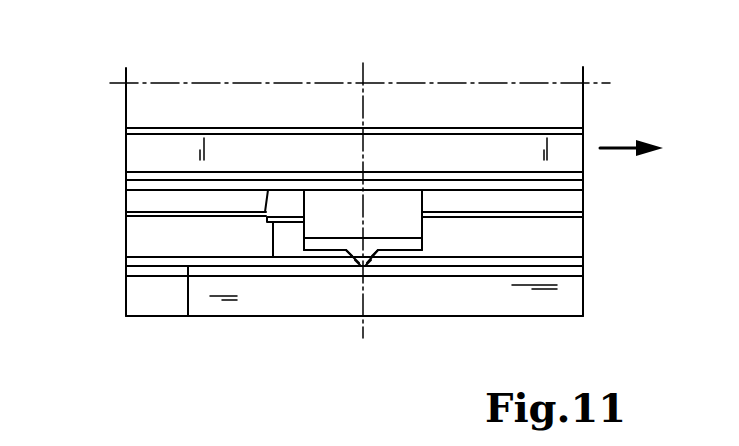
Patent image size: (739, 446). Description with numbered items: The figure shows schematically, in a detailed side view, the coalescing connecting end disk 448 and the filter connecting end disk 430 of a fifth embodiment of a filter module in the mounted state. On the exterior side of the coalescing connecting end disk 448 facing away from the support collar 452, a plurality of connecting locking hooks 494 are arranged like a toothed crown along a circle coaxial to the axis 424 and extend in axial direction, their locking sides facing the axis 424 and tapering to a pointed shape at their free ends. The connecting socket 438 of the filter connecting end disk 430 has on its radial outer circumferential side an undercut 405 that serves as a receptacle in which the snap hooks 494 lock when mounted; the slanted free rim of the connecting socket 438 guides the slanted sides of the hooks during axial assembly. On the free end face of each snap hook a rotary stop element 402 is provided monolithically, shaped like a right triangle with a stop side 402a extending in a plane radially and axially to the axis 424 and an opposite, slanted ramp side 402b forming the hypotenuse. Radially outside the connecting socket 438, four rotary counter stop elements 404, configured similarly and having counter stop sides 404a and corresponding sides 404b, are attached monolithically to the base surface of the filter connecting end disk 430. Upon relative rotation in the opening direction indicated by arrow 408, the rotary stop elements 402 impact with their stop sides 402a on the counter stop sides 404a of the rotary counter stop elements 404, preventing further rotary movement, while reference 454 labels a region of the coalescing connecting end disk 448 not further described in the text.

The support collar 452 is at (240, 106).
The axis 424 is at (366, 68).
The coalescing connecting end disk 448 is at (156, 148).
The top layer 454 is at (475, 120).
The connecting locking hooks 494 is at (374, 198).
The connecting socket 438 is at (148, 203).
The rotary stop element 402 is at (352, 238).
The rotary counter stop element 404 is at (374, 238).
The stop side 402a is at (357, 263).
The counter stop side 404a is at (372, 263).
The ramp side 402b is at (354, 254).
The second contact shoulder 404b is at (373, 260).
The undercut 405 is at (565, 237).
The filter connecting end disk 430 is at (173, 316).
The arrow 408 is at (627, 146).